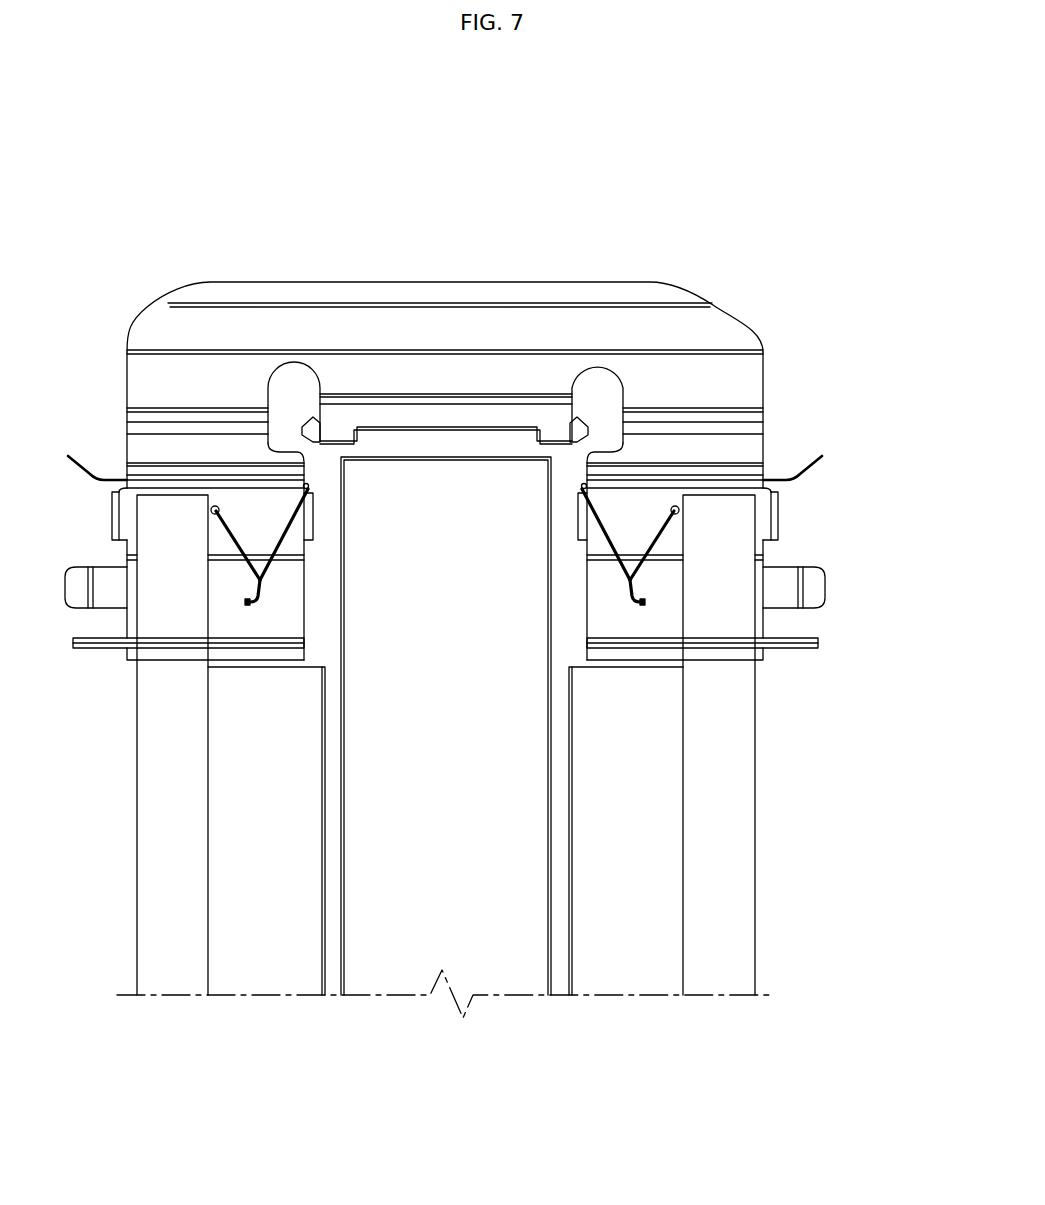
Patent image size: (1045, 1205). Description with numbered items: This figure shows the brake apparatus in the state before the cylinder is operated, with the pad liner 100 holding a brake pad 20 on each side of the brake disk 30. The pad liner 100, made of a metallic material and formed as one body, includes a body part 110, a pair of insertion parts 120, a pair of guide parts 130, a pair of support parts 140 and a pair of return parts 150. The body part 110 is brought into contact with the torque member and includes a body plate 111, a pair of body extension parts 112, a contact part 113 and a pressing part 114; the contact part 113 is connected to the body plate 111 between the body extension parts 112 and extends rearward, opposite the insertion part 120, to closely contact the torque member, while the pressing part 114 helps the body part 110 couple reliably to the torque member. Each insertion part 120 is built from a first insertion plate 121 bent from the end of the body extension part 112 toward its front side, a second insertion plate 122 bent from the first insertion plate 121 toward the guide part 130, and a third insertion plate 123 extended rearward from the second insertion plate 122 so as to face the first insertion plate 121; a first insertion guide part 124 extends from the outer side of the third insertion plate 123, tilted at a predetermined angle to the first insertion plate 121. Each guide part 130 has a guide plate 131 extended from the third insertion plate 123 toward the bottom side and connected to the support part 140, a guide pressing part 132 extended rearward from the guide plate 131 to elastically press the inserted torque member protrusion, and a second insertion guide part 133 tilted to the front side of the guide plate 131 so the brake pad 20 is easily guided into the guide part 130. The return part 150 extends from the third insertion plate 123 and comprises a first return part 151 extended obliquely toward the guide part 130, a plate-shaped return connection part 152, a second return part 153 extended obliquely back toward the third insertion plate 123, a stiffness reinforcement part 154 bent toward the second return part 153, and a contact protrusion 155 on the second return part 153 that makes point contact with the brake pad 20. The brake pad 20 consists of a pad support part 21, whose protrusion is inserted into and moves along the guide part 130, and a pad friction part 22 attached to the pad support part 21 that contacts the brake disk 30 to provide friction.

The pad liner 100 is at (599, 221).
The body part 110 is at (689, 321).
The body plate 111 is at (620, 330).
The body extension part 112 is at (730, 387).
The contact part 113 is at (525, 398).
The pressing part 114 is at (312, 418).
The insertion part 120 is at (830, 350).
The first insertion plate 121 is at (752, 410).
The second insertion plate 122 is at (742, 434).
The third insertion plate 123 is at (778, 493).
The first insertion guide part 124 is at (815, 476).
The guide part 130 is at (886, 530).
The guide plate 131 is at (760, 592).
The guide pressing part 132 is at (775, 520).
The second insertion guide part 133 is at (815, 582).
The support part 140 is at (107, 647).
The return part 150 is at (413, 466).
The first return part 151 is at (296, 515).
The return connection part 152 is at (262, 588).
The second return part 153 is at (247, 542).
The stiffness reinforcement part 154 is at (251, 603).
The contact protrusion 155 is at (216, 508).
The brake pad 20 is at (169, 877).
The pad support part 21 is at (176, 977).
The pad friction part 22 is at (264, 977).
The brake disk 30 is at (450, 472).